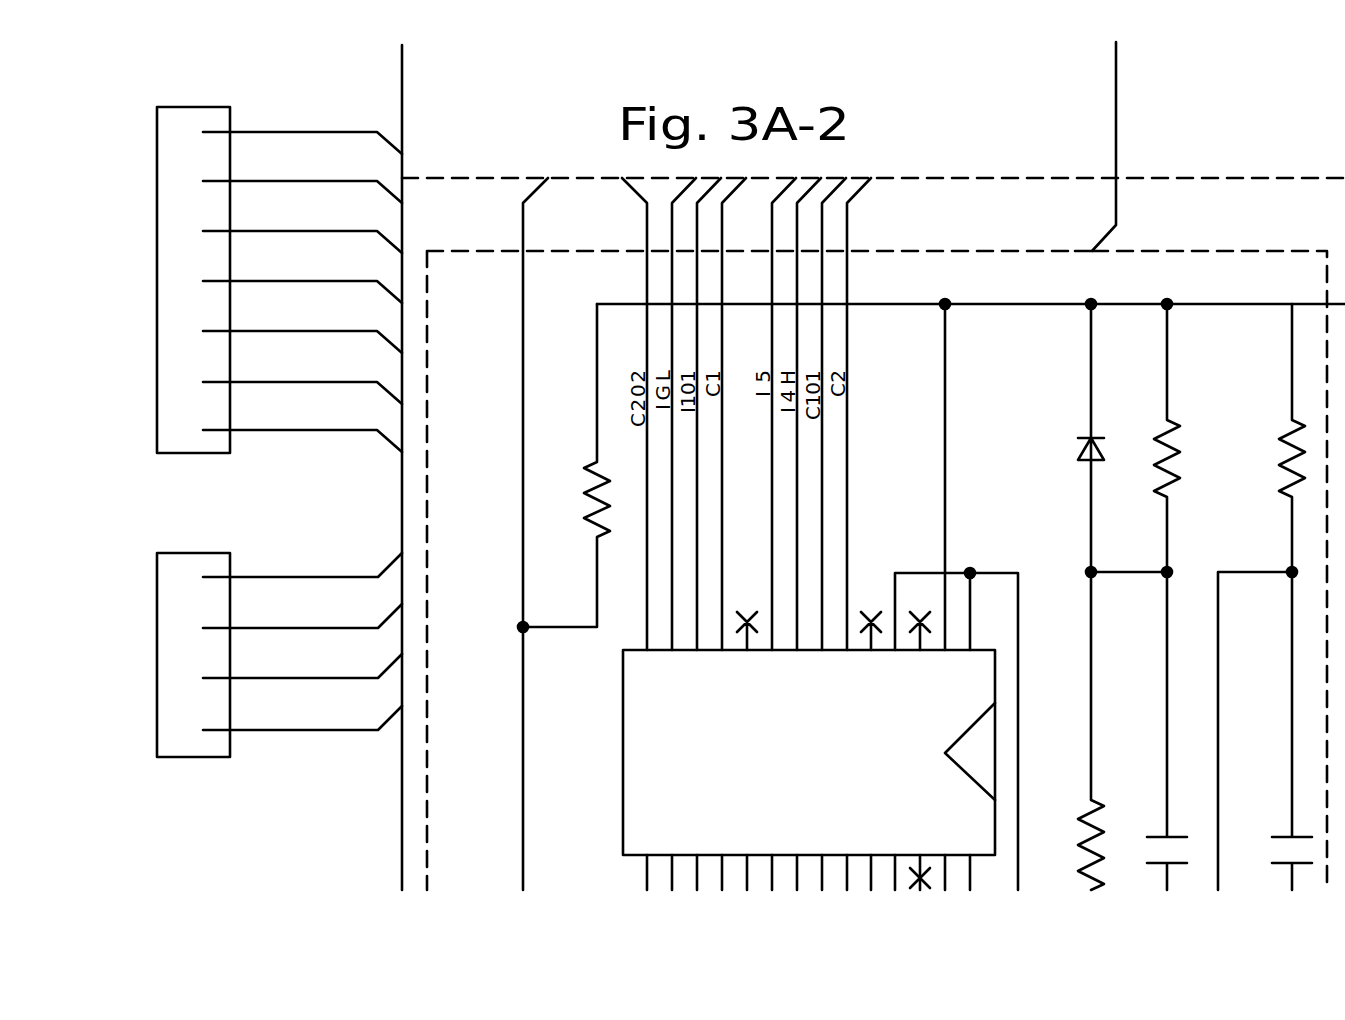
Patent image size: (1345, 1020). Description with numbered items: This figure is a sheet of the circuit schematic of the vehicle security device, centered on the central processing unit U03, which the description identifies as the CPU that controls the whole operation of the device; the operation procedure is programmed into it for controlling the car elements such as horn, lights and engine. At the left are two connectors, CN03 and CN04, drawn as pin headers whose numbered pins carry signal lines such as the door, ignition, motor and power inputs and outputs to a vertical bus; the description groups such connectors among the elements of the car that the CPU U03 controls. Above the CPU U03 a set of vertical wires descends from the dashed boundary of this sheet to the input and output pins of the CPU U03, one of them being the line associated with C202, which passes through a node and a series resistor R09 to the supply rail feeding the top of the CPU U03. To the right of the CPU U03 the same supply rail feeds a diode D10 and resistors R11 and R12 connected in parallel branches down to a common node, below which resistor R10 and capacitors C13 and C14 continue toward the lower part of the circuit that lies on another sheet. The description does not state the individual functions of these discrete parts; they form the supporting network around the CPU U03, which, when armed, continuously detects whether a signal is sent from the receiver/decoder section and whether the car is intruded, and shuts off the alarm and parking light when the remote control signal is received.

The connector CN03 is at (279, 263).
The connector CN04 is at (279, 638).
The capacitor C202 signal line C202 is at (522, 534).
The resistor R09 is at (566, 465).
The CPU U03 is at (796, 770).
The diode D10 is at (1080, 438).
The resistor R11 is at (1158, 438).
The resistor R12 is at (1280, 440).
The resistor R10 is at (1083, 731).
The capacitor C13 is at (1155, 731).
The capacitor C14 is at (1280, 731).